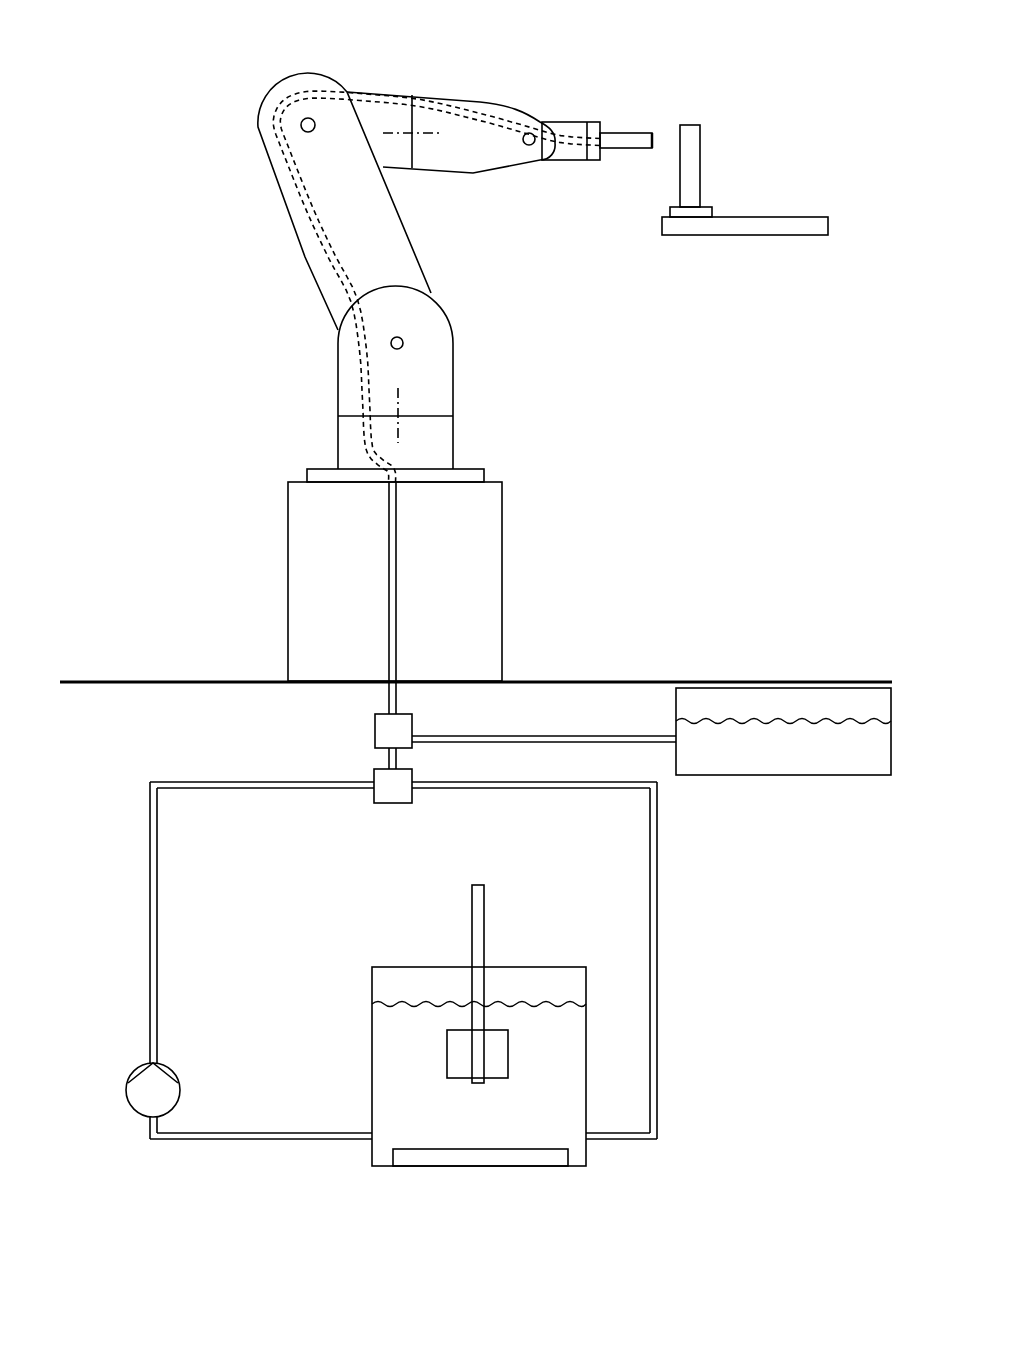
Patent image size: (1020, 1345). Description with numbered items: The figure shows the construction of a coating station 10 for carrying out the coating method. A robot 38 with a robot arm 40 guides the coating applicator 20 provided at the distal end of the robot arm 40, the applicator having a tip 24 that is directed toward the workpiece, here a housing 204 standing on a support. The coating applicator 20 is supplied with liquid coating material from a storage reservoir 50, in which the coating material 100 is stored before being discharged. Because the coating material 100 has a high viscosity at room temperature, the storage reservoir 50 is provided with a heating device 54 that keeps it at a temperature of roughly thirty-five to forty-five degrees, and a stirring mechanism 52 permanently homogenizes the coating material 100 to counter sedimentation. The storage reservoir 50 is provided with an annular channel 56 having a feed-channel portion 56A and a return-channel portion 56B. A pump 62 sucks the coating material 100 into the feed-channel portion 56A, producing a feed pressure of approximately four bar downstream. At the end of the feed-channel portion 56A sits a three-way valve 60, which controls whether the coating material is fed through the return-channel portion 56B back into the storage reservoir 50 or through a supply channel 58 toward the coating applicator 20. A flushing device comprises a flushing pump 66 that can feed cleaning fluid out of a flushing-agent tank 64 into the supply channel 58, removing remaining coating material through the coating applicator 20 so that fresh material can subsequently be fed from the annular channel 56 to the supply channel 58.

The coating station 10 is at (165, 95).
The coating applicator 20 is at (640, 123).
The dispensing tip 24 is at (650, 152).
The housing 204 is at (692, 183).
The robot 38 is at (214, 465).
The robot arm 40 is at (300, 253).
The supply channel 58 is at (390, 637).
The flushing pump 66 is at (405, 735).
The three-way valve 60 is at (390, 780).
The flushing-agent tank 64 is at (748, 775).
The annular channel 56 is at (138, 775).
The feed-channel portion 56A is at (153, 968).
The return-channel portion 56B is at (652, 908).
The pump 62 is at (128, 1112).
The storage reservoir 50 is at (370, 1188).
The coating material 100 is at (488, 1133).
The workpiece block 52 is at (434, 1045).
The heating device 54 is at (447, 1160).